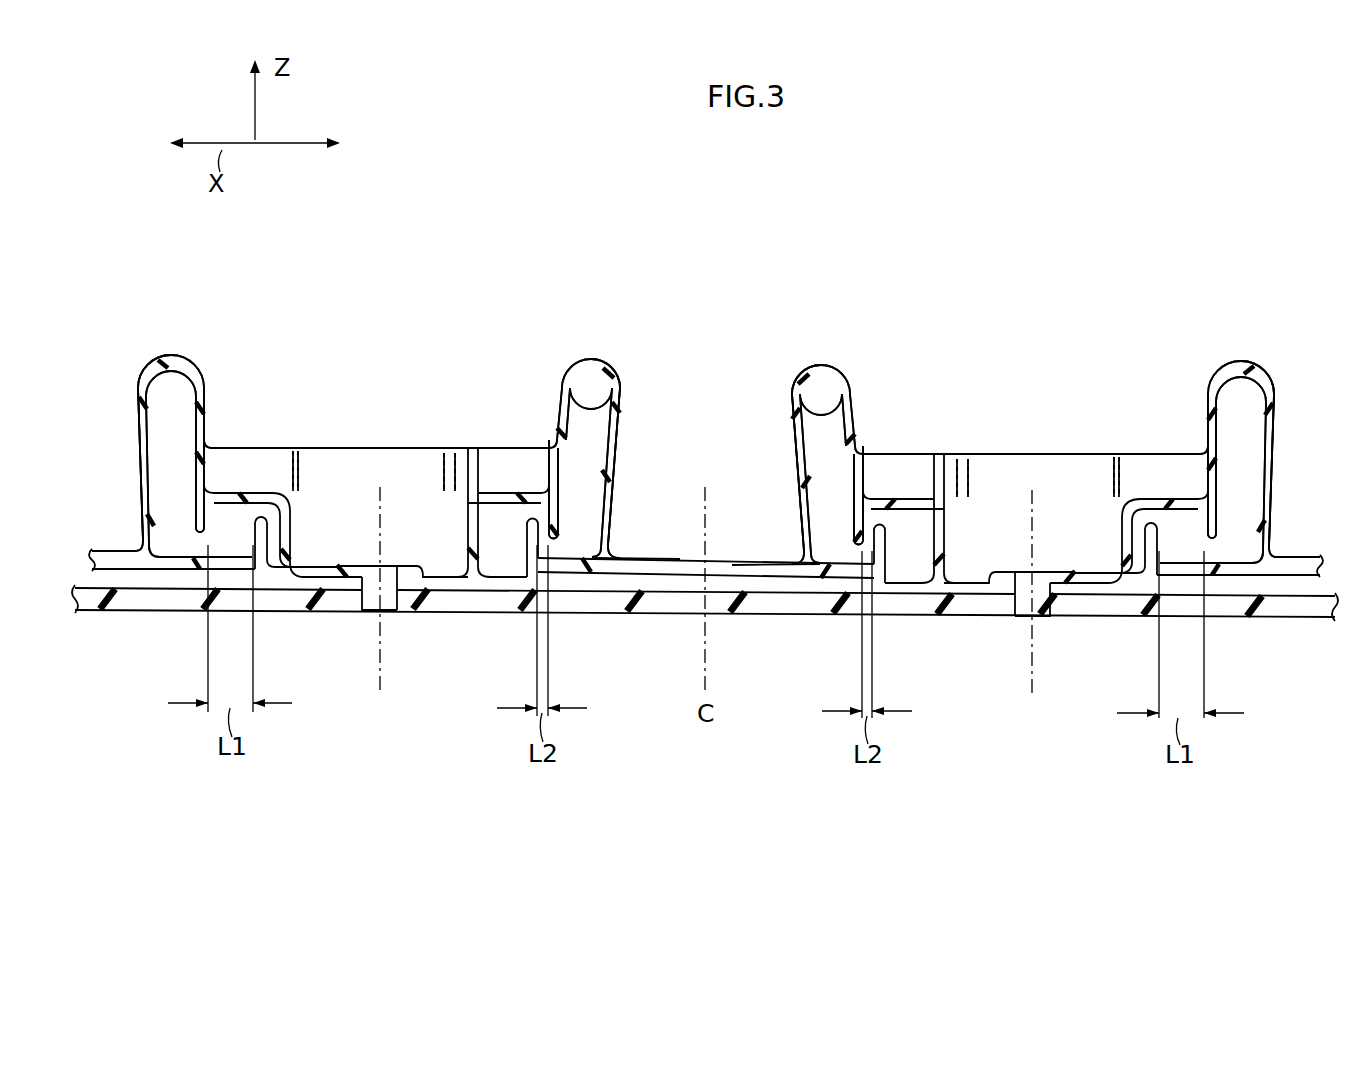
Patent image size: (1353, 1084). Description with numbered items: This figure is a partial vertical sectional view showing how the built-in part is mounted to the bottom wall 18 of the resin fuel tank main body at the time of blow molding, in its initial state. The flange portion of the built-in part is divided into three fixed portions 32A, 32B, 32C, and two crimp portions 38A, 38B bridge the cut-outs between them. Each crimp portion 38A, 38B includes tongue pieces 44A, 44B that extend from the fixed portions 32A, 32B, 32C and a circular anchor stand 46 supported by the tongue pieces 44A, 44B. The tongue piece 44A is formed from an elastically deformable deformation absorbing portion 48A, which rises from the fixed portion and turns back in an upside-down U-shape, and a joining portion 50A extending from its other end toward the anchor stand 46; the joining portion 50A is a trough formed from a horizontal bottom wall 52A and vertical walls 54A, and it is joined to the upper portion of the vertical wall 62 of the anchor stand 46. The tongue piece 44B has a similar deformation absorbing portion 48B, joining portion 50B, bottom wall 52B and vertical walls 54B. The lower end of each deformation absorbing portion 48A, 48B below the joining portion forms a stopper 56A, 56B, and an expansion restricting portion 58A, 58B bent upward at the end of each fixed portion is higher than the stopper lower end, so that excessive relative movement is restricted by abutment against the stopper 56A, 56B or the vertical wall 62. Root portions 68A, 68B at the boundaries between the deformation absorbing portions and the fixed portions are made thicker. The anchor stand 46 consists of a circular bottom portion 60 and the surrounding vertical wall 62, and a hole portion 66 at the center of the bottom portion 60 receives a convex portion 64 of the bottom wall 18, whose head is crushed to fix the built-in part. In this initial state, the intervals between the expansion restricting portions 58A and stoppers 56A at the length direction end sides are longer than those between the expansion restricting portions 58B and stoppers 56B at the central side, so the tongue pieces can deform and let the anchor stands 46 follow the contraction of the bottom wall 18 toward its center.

The bottom wall 18 is at (745, 617).
The fixed portion 32A is at (158, 573).
The fixed portion 32B is at (690, 579).
The fixed portion 32C is at (1254, 582).
The crimp portion 38A is at (383, 294).
The crimp portion 38B is at (1029, 300).
The tongue piece 44A is at (168, 354).
The tongue piece 44B is at (589, 355).
The anchor stand 46 is at (365, 449).
The deformation absorbing portion 48A is at (147, 430).
The deformation absorbing portion 48B is at (612, 418).
The joining portion 50A is at (255, 451).
The joining portion 50B is at (503, 451).
The bottom wall 52A is at (222, 488).
The bottom wall 52B is at (536, 490).
The vertical wall 54A is at (283, 448).
The vertical wall 54B is at (477, 447).
The stopper 56A is at (256, 528).
The stopper 56B is at (552, 556).
The expansion restricting portion 58A is at (252, 560).
The expansion restricting portion 58B is at (524, 548).
The bottom portion 60 is at (365, 607).
The vertical wall 62 is at (408, 448).
The convex portion 64 is at (404, 565).
The hole portion 66 is at (347, 565).
The root portion 68A is at (140, 554).
The root portion 68B is at (618, 557).